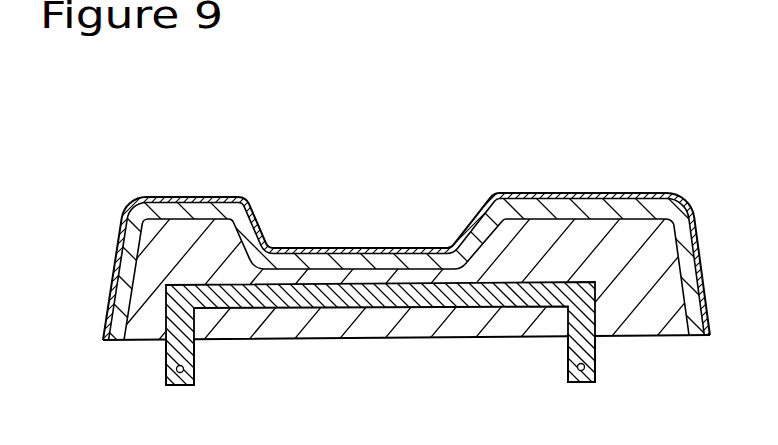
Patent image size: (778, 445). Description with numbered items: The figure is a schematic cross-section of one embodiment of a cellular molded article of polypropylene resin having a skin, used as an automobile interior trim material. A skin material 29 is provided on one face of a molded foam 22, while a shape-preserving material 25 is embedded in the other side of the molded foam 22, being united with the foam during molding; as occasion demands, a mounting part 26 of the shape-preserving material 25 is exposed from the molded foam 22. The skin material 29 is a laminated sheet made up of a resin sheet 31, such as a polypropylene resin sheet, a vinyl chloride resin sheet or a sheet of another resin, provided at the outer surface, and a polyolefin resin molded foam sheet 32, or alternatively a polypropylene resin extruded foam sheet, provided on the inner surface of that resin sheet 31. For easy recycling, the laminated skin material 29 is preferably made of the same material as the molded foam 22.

The molded foam 22 is at (637, 308).
The shape-preserving material 25 is at (420, 300).
The mounting part 26 is at (192, 358).
The skin material 29 is at (603, 191).
The resin sheet 31 is at (512, 191).
The polyolefin resin molded foam sheet 32 is at (548, 208).